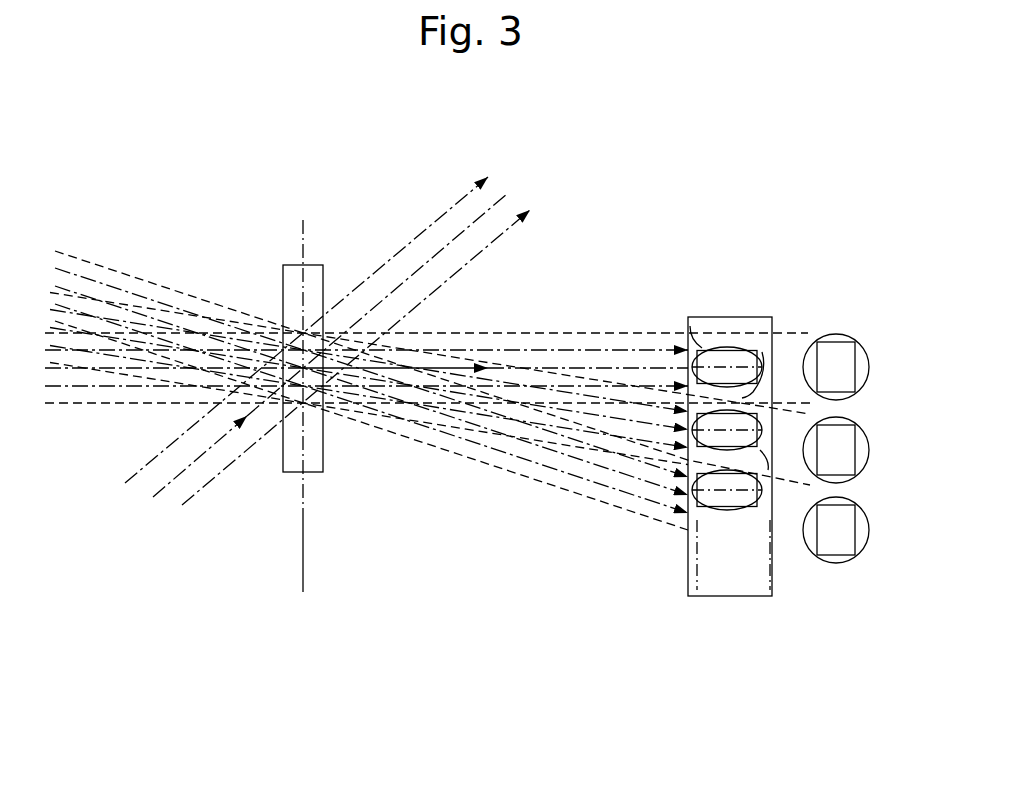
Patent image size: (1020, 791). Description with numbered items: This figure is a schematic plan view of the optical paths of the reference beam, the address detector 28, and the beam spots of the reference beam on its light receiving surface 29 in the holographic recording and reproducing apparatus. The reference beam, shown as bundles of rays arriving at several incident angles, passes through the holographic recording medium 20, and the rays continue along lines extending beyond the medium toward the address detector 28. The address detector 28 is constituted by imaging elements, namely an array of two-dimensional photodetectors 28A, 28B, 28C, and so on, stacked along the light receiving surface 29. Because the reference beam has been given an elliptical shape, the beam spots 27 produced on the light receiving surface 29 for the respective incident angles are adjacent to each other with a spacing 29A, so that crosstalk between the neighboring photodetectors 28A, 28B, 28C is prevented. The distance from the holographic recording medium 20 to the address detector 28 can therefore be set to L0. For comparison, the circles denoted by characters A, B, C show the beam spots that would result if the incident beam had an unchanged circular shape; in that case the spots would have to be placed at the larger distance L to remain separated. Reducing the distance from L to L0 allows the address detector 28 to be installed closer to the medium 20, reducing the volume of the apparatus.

The holographic recording medium 20 is at (283, 265).
The beam spot 27 is at (762, 352).
The address detector 28 is at (712, 597).
The two-dimensional photodetector 28A is at (697, 348).
The two-dimensional photodetector 28B is at (760, 447).
The two-dimensional photodetector 28C is at (727, 524).
The light receiving surface 29 is at (713, 322).
The spacing 29A is at (765, 395).
The circle A is at (868, 374).
The circle B is at (868, 457).
The circle C is at (868, 537).
The distance L0 is at (303, 542).
The distance L is at (820, 582).